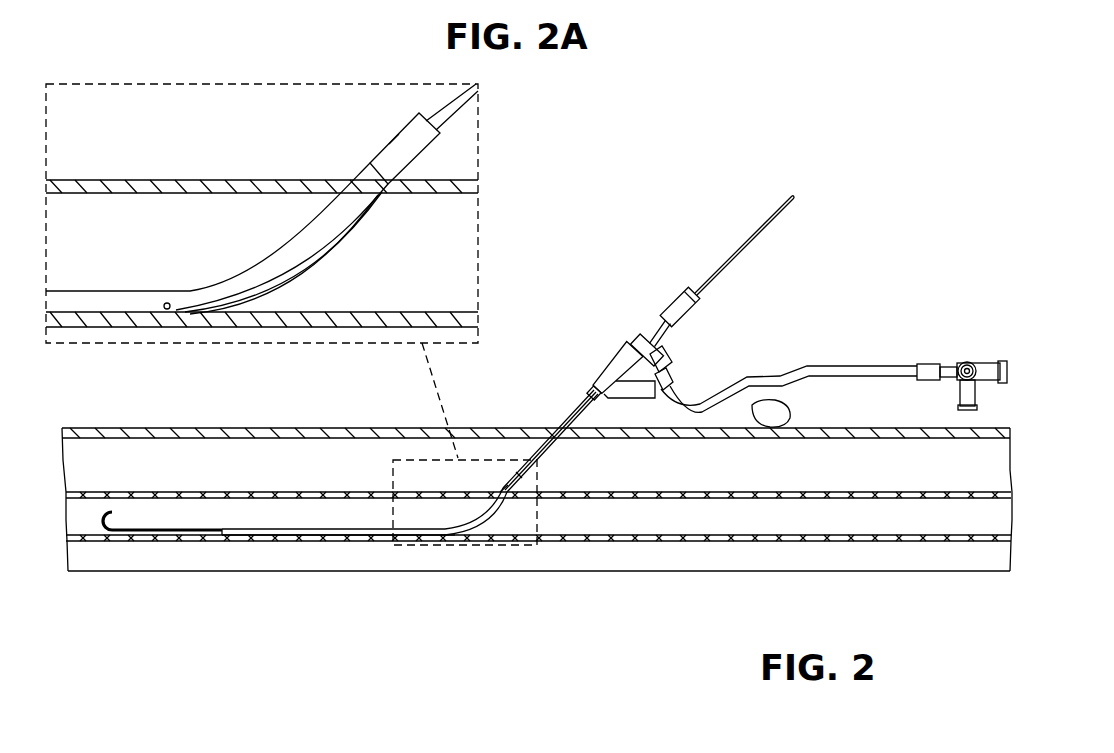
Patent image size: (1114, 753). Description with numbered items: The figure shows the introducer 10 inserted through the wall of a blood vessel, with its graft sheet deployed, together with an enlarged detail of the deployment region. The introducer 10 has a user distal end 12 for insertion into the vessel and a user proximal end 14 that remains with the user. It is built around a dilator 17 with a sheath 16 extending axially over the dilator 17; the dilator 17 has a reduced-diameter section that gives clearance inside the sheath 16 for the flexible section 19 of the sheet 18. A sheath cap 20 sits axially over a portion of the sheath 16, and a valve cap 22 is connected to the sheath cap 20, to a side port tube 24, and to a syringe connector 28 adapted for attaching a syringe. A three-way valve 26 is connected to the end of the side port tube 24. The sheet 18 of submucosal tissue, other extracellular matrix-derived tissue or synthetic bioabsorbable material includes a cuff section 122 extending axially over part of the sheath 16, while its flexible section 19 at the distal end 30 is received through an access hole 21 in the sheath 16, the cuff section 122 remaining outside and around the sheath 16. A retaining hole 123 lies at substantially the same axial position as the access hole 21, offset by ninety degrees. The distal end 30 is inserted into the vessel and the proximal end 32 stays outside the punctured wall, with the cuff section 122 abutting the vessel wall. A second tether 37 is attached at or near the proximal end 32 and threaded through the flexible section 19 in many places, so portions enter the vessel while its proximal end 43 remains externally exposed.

In FIG. 2, the introducer 10 is at (720, 333).
In FIG. 2, the user distal end 12 is at (240, 548).
In FIG. 2, the user proximal end 14 is at (677, 268).
In FIG. 2A, the sheath 16 is at (135, 304).
In FIG. 2, the sheath 16 is at (465, 538).
In FIG. 2, the dilator 17 is at (173, 545).
In FIG. 2A, the sheet 18 is at (434, 152).
In FIG. 2, the sheet 18 is at (503, 466).
In FIG. 2A, the flexible section 19 is at (303, 290).
In FIG. 2, the flexible section 19 is at (487, 527).
In FIG. 2, the sheath cap 20 is at (668, 358).
In FIG. 2A, the access hole 21 is at (200, 314).
In FIG. 2, the valve cap 22 is at (633, 340).
In FIG. 2, the side port tube 24 is at (672, 378).
In FIG. 2, the three-way valve 26 is at (971, 352).
In FIG. 2, the syringe connector 28 is at (702, 304).
In FIG. 2, the distal end 30 is at (447, 537).
In FIG. 2, the proximal end 32 is at (523, 457).
In FIG. 2, the second tether 37 is at (647, 400).
In FIG. 2, the proximal end of tether 43 is at (795, 407).
In FIG. 2A, the cuff section 122 is at (392, 141).
In FIG. 2, the cuff section 122 is at (522, 478).
In FIG. 2A, the retaining hole 123 is at (170, 297).